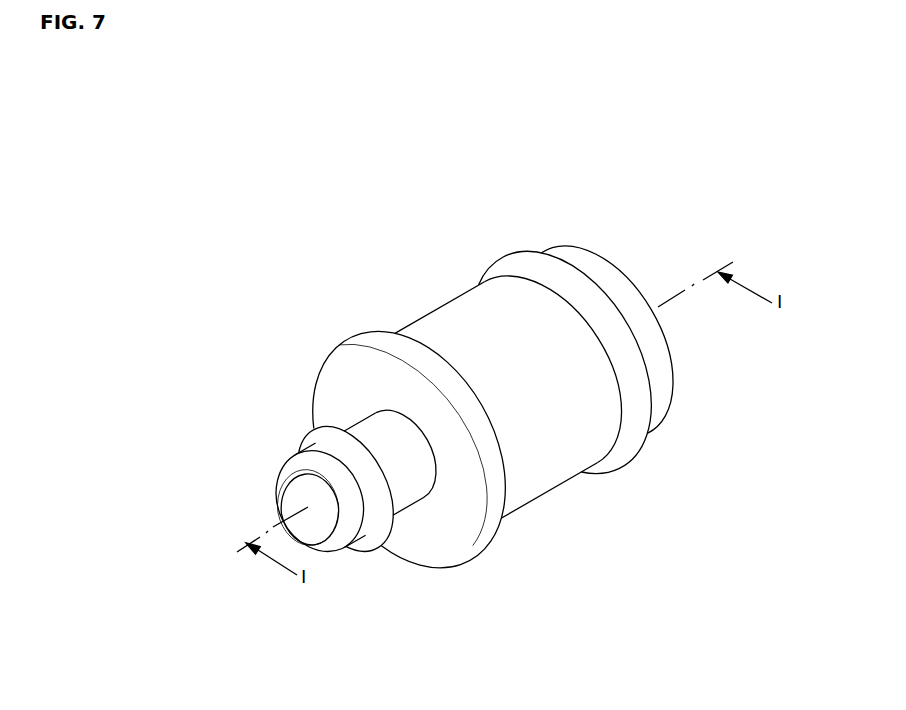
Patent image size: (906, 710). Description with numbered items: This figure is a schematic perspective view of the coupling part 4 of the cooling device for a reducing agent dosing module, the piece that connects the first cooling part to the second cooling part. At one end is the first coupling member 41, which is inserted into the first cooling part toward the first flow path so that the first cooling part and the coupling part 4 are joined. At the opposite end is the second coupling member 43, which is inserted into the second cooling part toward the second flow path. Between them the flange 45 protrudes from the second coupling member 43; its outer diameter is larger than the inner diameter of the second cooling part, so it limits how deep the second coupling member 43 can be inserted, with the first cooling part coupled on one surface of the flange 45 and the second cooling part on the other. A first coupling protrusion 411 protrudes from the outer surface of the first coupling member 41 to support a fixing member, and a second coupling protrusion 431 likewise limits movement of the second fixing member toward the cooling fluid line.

The coupling part 4 is at (453, 375).
The first coupling member 41 is at (301, 471).
The first coupling protrusion 411 is at (310, 444).
The flange 45 is at (378, 336).
The second coupling member 43 is at (576, 335).
The second coupling protrusion 431 is at (523, 263).